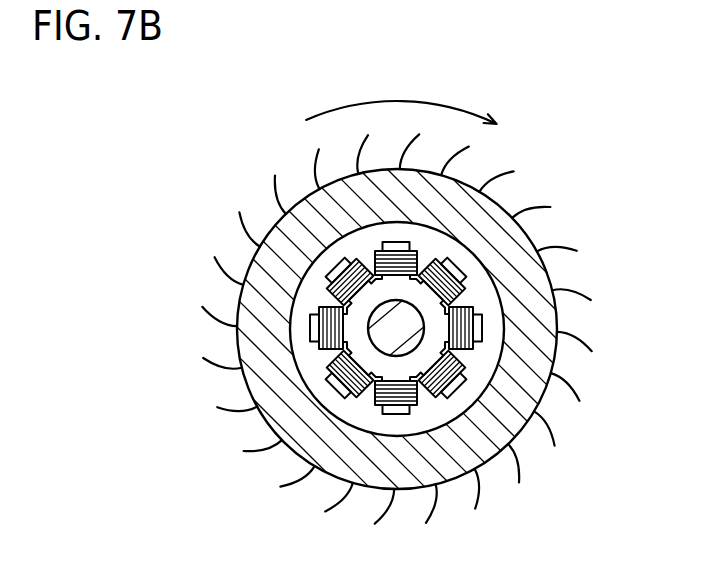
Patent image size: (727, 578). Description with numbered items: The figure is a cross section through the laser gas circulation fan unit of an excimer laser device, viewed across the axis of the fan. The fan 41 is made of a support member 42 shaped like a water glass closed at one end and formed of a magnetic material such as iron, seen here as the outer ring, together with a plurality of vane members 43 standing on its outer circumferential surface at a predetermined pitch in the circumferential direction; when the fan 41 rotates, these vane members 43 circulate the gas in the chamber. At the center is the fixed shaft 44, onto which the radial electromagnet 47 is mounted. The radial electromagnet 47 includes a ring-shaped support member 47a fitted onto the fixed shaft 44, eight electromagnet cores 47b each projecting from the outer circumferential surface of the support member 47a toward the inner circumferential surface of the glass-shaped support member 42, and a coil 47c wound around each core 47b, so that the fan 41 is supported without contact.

The fan 41 is at (207, 199).
The support member 42 is at (265, 298).
The vane members 43 is at (263, 446).
The fixed shaft 44 is at (388, 338).
The radial electromagnet 47 is at (486, 405).
The ring-shaped support member 47a is at (464, 396).
The electromagnet cores 47b is at (460, 270).
The coil 47c is at (473, 338).